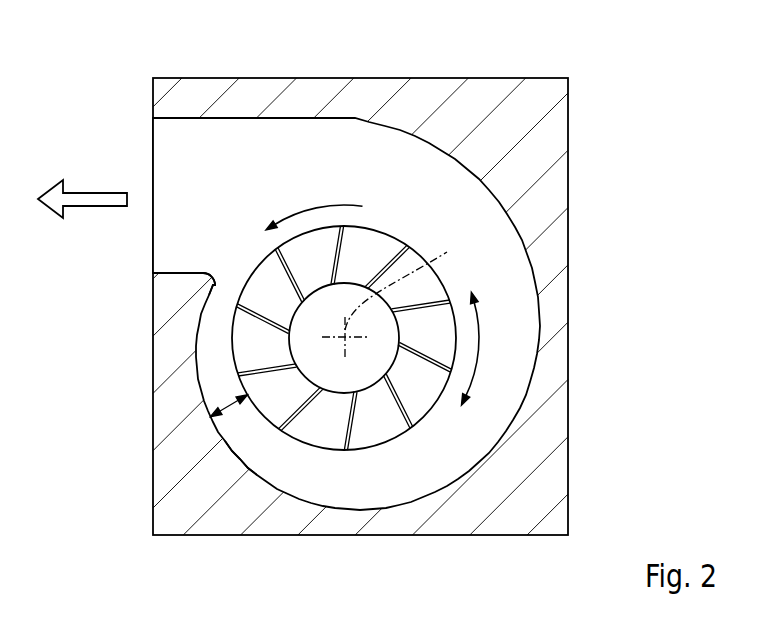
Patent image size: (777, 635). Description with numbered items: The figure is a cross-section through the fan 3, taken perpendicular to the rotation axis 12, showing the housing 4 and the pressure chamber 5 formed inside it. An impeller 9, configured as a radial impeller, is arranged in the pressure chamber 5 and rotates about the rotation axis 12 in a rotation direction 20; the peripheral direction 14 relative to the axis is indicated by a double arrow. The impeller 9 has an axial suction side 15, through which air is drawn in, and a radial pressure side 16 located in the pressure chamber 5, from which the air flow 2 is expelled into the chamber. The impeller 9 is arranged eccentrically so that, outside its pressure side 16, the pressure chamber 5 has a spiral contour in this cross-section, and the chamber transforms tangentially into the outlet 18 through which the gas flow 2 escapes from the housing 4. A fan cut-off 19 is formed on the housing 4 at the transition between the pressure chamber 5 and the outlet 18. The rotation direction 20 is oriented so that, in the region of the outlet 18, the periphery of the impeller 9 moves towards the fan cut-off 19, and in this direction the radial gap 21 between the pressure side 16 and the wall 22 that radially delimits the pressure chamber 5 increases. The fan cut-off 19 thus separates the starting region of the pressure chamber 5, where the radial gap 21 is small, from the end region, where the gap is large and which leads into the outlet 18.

The air flow 2 is at (90, 197).
The fan 3 is at (628, 147).
The housing 4 is at (569, 244).
The pressure chamber 5 is at (235, 183).
The impeller 9 is at (318, 375).
The rotation axis 12 is at (405, 279).
The peripheral direction 14 is at (477, 350).
The suction side 15 is at (363, 375).
The pressure side 16 is at (440, 405).
The outlet 18 is at (162, 236).
The fan cut-off 19 is at (215, 272).
The rotation direction 20 is at (323, 205).
The radial gap 21 is at (228, 403).
The wall 22 is at (255, 463).